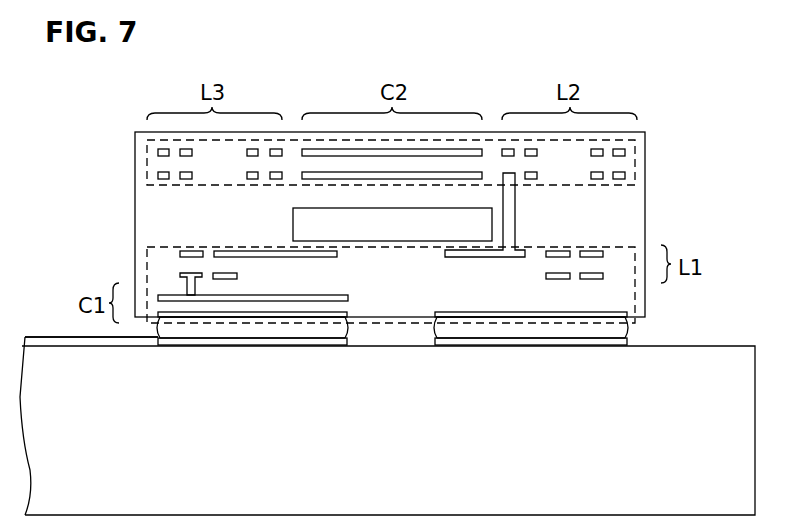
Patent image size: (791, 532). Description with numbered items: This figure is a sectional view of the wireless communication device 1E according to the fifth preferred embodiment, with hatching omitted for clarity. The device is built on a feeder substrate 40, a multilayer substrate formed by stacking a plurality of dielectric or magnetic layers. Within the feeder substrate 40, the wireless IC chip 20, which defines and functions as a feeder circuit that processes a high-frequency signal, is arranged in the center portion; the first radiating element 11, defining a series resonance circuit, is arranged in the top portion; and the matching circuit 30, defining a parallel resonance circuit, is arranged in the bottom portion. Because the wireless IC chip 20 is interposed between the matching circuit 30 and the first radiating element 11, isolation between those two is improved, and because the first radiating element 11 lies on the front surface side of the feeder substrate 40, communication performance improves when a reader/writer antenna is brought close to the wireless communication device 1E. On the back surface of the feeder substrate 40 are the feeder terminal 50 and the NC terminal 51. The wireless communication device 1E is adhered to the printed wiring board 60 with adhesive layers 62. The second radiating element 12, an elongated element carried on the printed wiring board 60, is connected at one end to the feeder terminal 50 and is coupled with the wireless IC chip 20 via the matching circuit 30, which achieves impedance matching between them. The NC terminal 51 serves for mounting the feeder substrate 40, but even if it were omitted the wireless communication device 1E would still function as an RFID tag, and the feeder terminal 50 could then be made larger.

The wireless communication device 1E is at (716, 67).
The first radiating element 11 is at (635, 153).
The second radiating element 12 is at (130, 347).
The wireless IC chip 20 is at (293, 224).
The matching circuit 30 is at (626, 246).
The feeder substrate 40 is at (135, 201).
The feeder terminal 50 is at (350, 308).
The NC terminal 51 is at (458, 318).
The printed wiring board 60 is at (726, 345).
The adhesive layers 62 is at (313, 330).